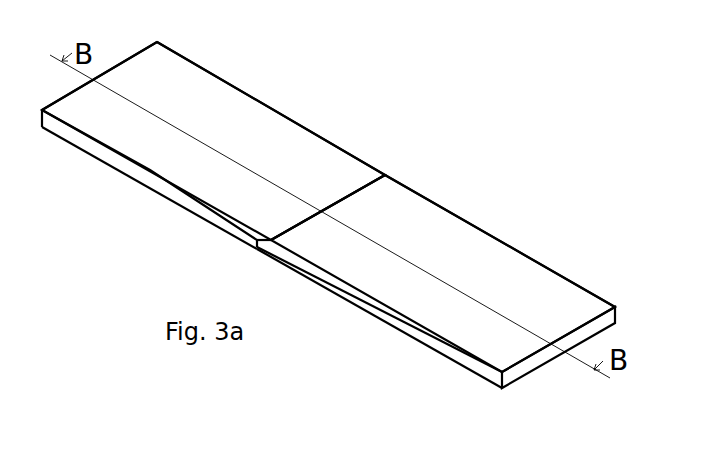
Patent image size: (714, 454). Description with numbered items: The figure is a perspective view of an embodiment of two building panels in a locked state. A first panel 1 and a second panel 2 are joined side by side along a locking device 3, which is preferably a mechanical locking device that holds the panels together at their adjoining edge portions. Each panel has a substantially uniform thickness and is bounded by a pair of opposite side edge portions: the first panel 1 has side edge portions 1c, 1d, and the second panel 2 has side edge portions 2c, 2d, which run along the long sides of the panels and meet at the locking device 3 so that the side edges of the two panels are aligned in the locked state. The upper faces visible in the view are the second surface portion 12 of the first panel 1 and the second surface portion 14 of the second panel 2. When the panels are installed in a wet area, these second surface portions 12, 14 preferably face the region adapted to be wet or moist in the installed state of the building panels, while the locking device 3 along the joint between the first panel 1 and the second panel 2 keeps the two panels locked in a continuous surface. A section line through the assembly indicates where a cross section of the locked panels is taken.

The first panel 1 is at (152, 60).
The second panel 2 is at (512, 259).
The locking device 3 is at (395, 160).
The second surface portion 12 is at (263, 118).
The second surface portion 14 is at (462, 226).
The side edge portion 1c is at (152, 202).
The side edge portion 1d is at (296, 110).
The side edge portion 2c is at (300, 286).
The side edge portion 2d is at (486, 213).